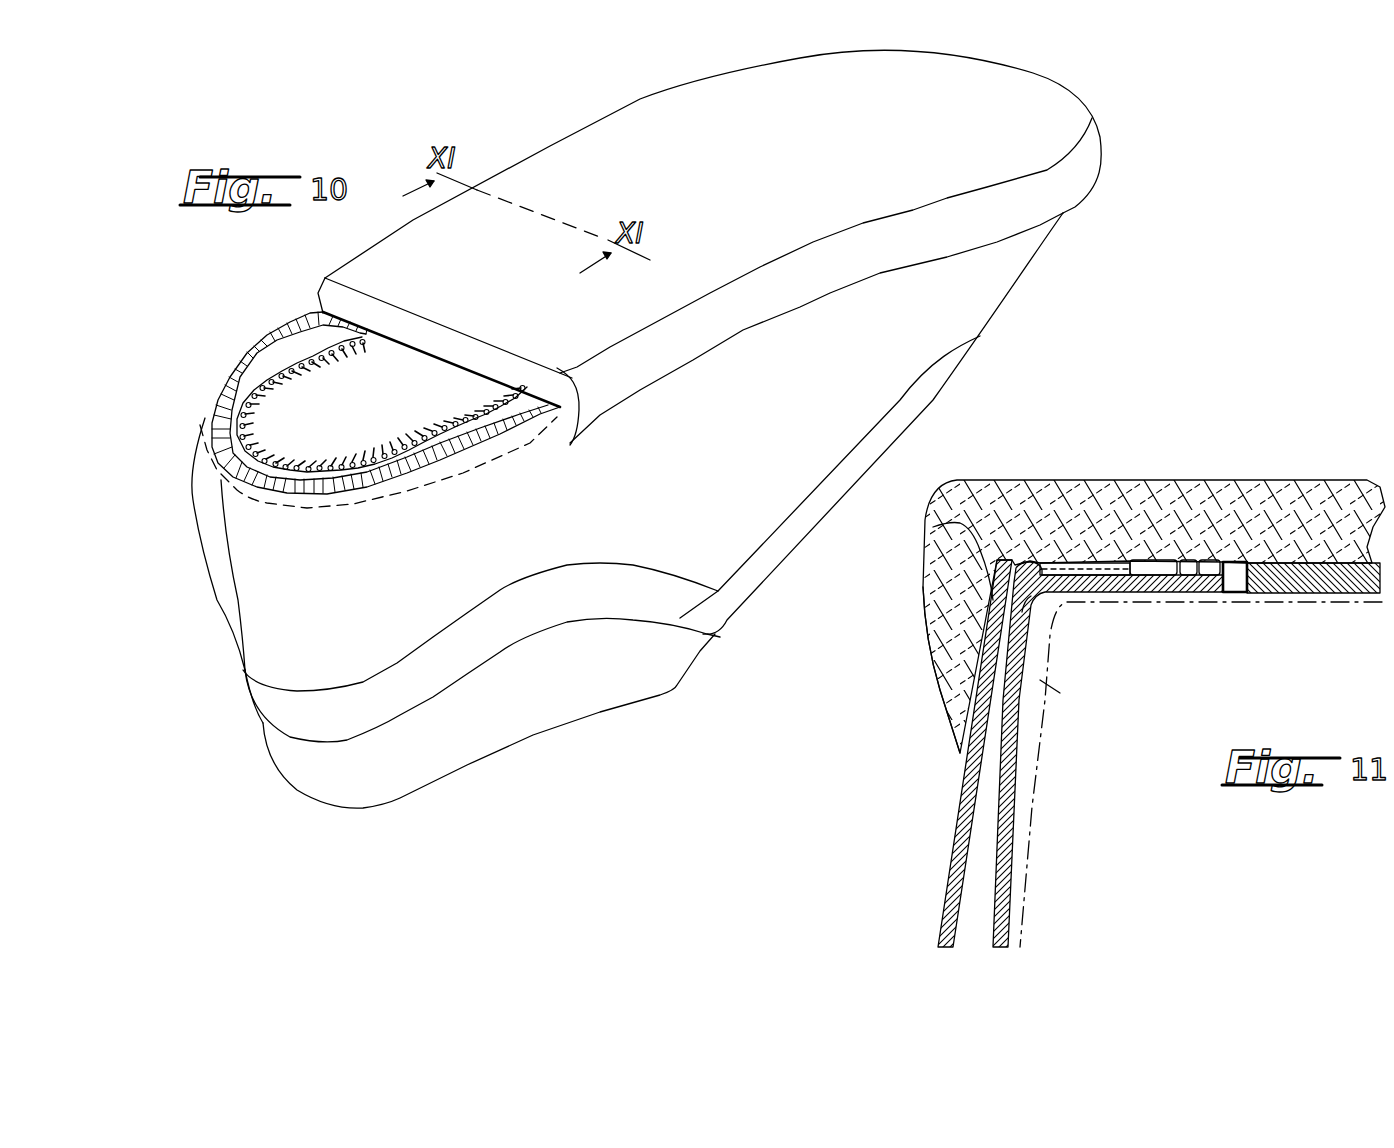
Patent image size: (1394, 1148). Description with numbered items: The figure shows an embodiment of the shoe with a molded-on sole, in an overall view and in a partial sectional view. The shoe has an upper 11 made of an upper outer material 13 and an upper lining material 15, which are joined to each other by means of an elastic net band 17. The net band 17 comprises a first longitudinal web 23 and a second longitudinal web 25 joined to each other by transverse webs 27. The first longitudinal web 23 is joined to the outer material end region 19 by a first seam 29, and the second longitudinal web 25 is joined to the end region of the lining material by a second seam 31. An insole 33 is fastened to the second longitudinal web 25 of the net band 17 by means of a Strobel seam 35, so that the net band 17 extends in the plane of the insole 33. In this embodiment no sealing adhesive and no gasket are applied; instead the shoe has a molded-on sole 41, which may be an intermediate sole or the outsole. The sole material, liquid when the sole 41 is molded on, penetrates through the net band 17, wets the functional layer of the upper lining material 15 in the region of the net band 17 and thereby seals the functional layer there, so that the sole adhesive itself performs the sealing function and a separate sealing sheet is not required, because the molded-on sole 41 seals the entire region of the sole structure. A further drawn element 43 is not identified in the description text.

In FIG. 10, the upper 11 is at (232, 628).
In FIG. 10, the upper outer material 13 is at (990, 290).
In FIG. 11, the upper outer material 13 is at (953, 803).
In FIG. 11, the upper lining material 15 is at (1013, 777).
In FIG. 10, the elastic net band 17 is at (370, 490).
In FIG. 10, the outer material end region 19 is at (207, 433).
In FIG. 11, the first longitudinal web 23 is at (967, 653).
In FIG. 11, the second longitudinal web 25 is at (1157, 567).
In FIG. 11, the transverse webs 27 is at (1047, 590).
In FIG. 10, the first seam 29 is at (322, 510).
In FIG. 11, the first seam 29 is at (933, 527).
In FIG. 10, the second seam 31 is at (273, 490).
In FIG. 11, the second seam 31 is at (1167, 595).
In FIG. 10, the insole 33 is at (339, 418).
In FIG. 11, the insole 33 is at (1333, 583).
In FIG. 10, the Strobel seam 35 is at (385, 445).
In FIG. 11, the Strobel seam 35 is at (1221, 600).
In FIG. 10, the molded-on sole (outsole) 41 is at (1060, 130).
In FIG. 11, the molded-on sole (outsole) 41 is at (917, 593).
In FIG. 10, the sole layers / base 43 is at (503, 733).
In FIG. 11, the sole layers / base 43 is at (1040, 737).